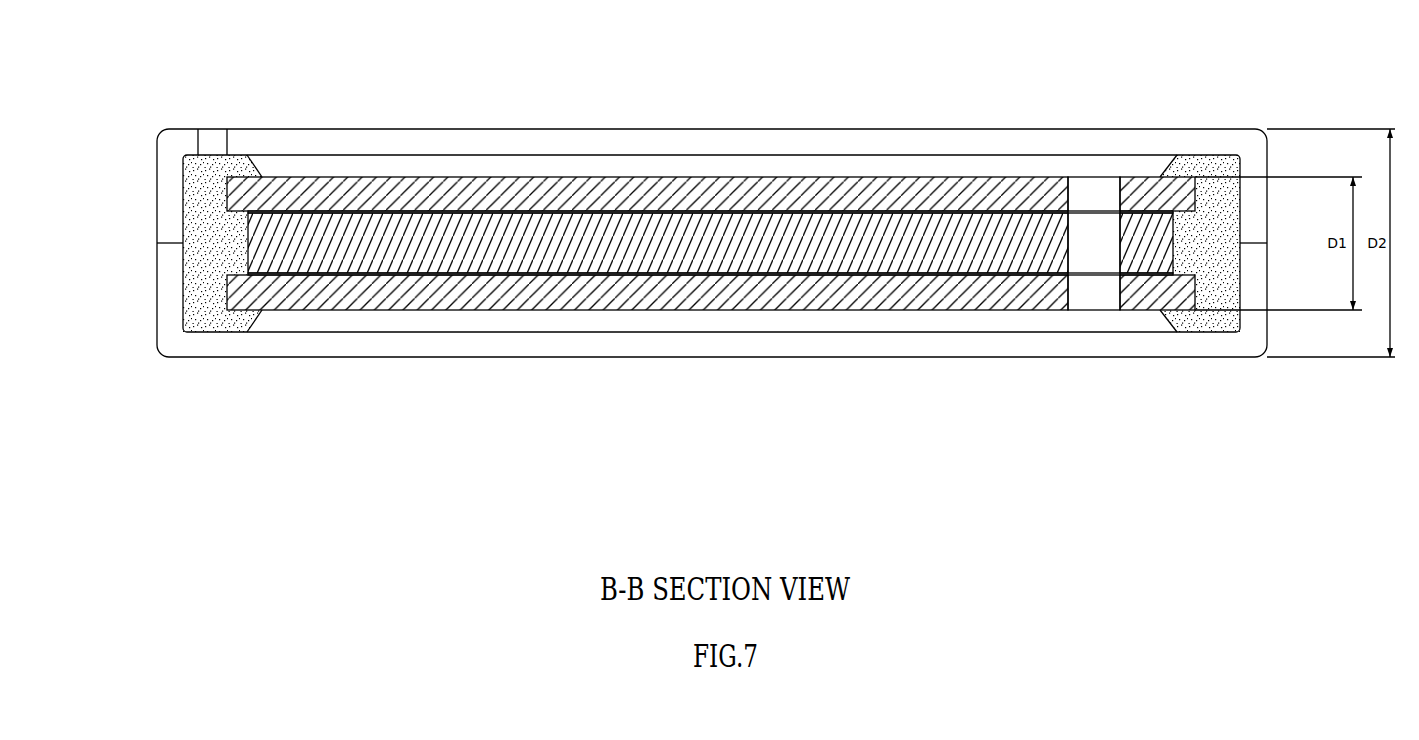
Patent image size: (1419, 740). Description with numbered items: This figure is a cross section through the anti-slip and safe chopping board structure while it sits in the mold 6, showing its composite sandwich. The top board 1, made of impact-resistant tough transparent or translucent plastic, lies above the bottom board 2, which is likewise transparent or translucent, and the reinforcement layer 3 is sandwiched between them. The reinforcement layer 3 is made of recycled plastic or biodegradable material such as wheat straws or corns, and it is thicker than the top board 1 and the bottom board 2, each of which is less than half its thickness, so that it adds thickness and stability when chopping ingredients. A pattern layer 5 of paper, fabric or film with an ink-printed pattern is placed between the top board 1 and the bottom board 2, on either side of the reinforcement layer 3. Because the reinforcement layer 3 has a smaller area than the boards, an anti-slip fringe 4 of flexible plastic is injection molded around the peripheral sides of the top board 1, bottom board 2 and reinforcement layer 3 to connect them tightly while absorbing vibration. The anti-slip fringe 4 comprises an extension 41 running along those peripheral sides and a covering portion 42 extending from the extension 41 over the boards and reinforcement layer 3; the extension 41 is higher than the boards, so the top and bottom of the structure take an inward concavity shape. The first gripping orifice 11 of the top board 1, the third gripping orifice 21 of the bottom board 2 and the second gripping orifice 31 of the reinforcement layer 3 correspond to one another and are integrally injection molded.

The top board 1 is at (330, 182).
The bottom board 2 is at (348, 298).
The reinforcement layer 3 is at (557, 255).
The anti-slip fringe 4 is at (165, 243).
The extension 41 is at (183, 212).
The covering portion 42 is at (212, 330).
The pattern layer 5 is at (850, 210).
The mold 6 is at (737, 137).
The first gripping orifice 11 is at (1103, 197).
The third gripping orifice 21 is at (1097, 292).
The second gripping orifice 31 is at (1100, 258).